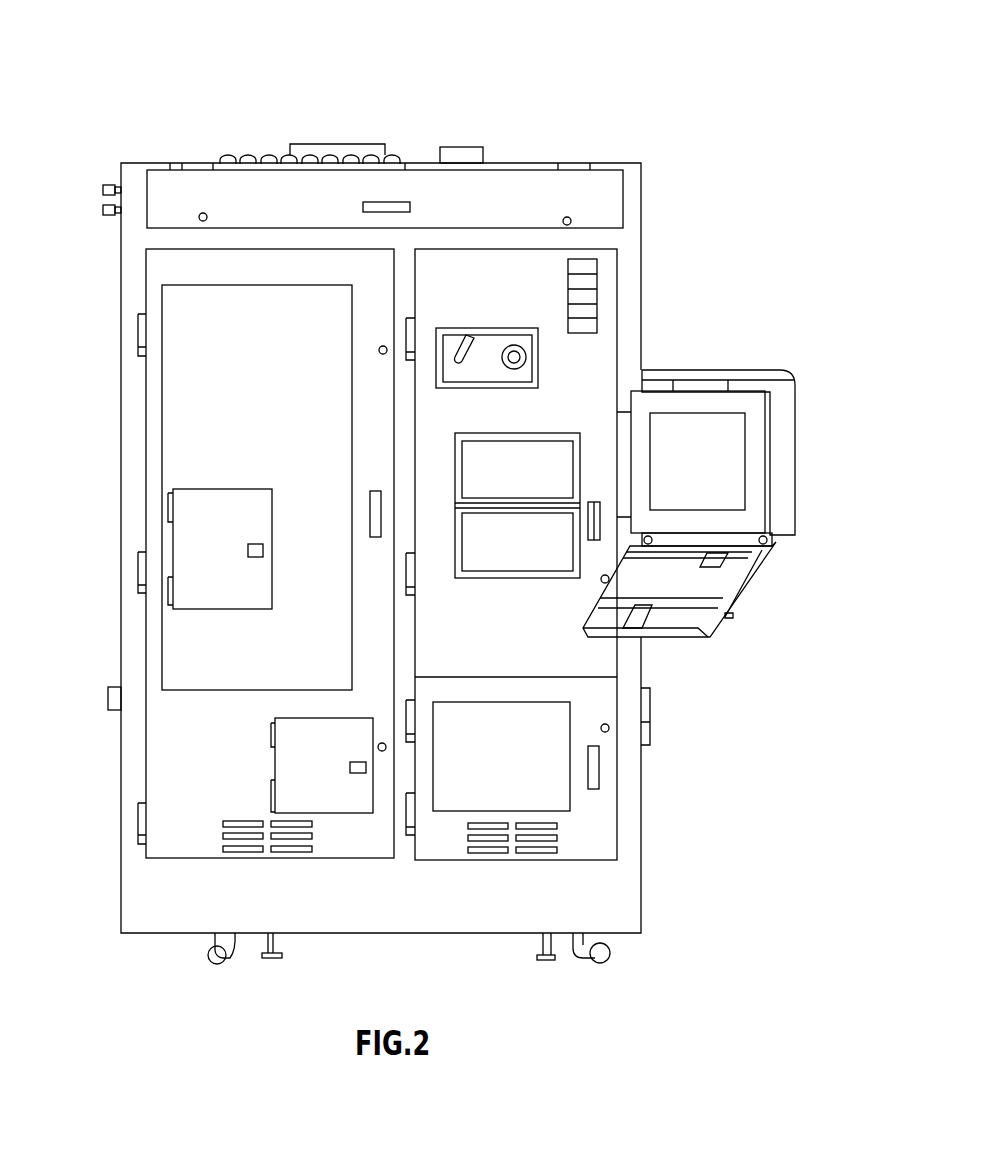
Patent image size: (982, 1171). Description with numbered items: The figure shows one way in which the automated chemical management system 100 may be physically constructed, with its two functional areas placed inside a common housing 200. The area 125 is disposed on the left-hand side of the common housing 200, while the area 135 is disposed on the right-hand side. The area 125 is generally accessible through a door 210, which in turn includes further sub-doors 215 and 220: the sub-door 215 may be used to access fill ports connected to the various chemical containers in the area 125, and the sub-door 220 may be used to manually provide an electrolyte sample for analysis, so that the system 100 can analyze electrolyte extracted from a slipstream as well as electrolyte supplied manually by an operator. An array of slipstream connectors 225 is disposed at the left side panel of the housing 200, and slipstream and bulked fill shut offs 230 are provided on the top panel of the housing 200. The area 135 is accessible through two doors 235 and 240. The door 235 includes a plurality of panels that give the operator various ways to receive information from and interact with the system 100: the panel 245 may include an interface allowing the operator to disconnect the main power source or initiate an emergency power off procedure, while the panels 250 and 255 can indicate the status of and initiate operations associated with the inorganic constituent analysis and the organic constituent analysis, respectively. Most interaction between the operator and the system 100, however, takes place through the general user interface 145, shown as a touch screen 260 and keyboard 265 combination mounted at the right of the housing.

The automated chemical management system 100 is at (438, 92).
The common housing 200 is at (601, 163).
The slipstream and bulked fill shut offs 230 is at (248, 152).
The slipstream connectors 225 is at (102, 182).
The area 125 is at (145, 375).
The door 210 is at (172, 268).
The sub-door 215 is at (173, 550).
The sub-door 220 is at (275, 770).
The area 135 is at (640, 258).
The door 235 is at (597, 363).
The panel 245 is at (458, 357).
The panel 250 is at (531, 465).
The panel 255 is at (690, 745).
The door 240 is at (678, 848).
The touch screen 260 is at (780, 420).
The general user interface 145 is at (808, 470).
The keyboard 265 is at (783, 617).